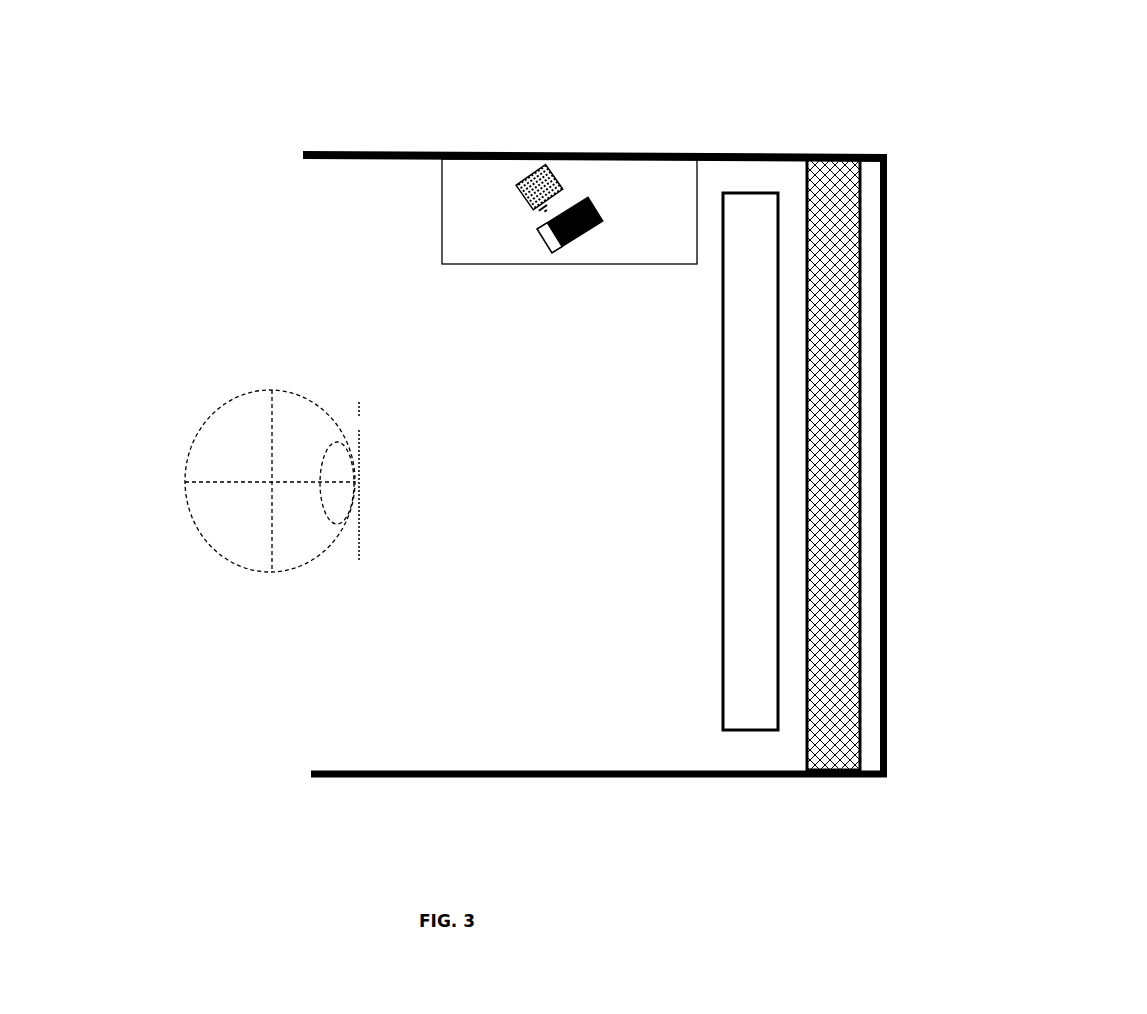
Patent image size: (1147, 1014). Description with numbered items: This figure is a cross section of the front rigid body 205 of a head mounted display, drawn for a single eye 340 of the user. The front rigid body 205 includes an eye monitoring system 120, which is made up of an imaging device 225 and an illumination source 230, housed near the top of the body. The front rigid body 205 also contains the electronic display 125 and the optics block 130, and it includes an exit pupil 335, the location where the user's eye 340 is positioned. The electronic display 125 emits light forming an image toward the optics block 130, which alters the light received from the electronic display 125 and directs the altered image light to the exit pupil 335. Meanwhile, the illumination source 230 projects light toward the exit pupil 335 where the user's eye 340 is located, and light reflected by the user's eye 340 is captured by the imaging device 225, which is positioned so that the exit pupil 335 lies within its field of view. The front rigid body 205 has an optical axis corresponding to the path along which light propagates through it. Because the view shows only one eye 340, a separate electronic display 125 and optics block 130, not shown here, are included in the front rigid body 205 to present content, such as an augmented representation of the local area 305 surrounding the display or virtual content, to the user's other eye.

The eye monitoring system 120 is at (569, 266).
The electronic display 125 is at (862, 222).
The optics block 130 is at (748, 734).
The front rigid body 205 is at (889, 778).
The imaging device 225 is at (603, 201).
The illumination source 230 is at (520, 167).
The local area 305 is at (1095, 254).
The exit pupil 335 is at (358, 404).
The eye 340 is at (225, 562).